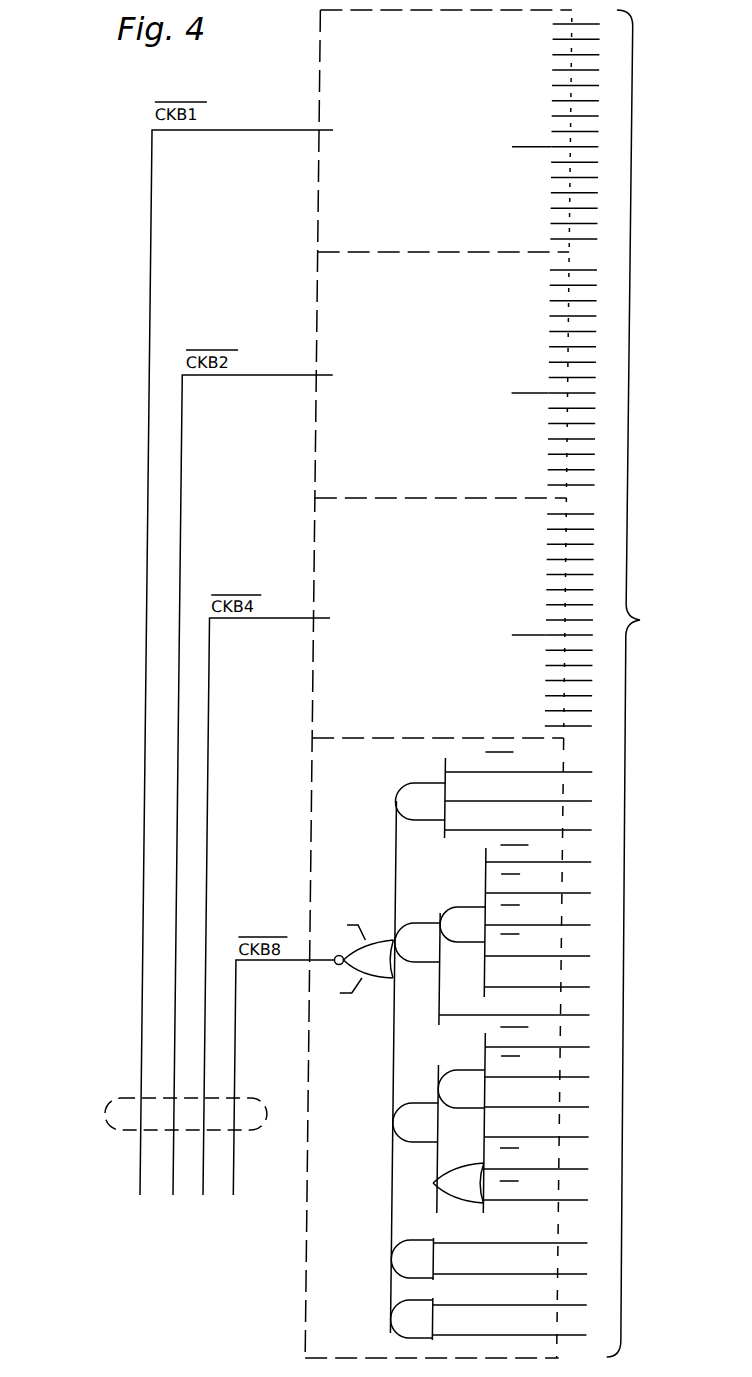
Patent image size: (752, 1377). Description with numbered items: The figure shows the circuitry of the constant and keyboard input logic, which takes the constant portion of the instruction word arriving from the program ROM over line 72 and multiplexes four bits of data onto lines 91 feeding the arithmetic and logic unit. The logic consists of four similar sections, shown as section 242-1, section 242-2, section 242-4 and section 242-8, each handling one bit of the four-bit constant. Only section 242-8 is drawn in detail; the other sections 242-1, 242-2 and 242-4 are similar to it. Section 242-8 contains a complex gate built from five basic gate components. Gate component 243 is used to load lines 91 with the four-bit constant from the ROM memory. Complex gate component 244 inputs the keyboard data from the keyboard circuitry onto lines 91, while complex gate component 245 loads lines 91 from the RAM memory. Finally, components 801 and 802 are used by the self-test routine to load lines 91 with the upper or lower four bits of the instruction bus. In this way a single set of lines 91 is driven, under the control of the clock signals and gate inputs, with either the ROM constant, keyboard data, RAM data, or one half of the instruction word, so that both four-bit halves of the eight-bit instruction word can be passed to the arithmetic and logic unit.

The line 72 is at (641, 683).
The line 91 is at (140, 1108).
The section 242-1 is at (459, 138).
The section 242-2 is at (456, 384).
The section 242-4 is at (453, 626).
The section 242-8 is at (453, 1054).
The gate component 243 is at (429, 795).
The complex gate component 244 is at (430, 932).
The complex gate component 245 is at (435, 1115).
The component 801 is at (431, 1247).
The component 802 is at (431, 1308).